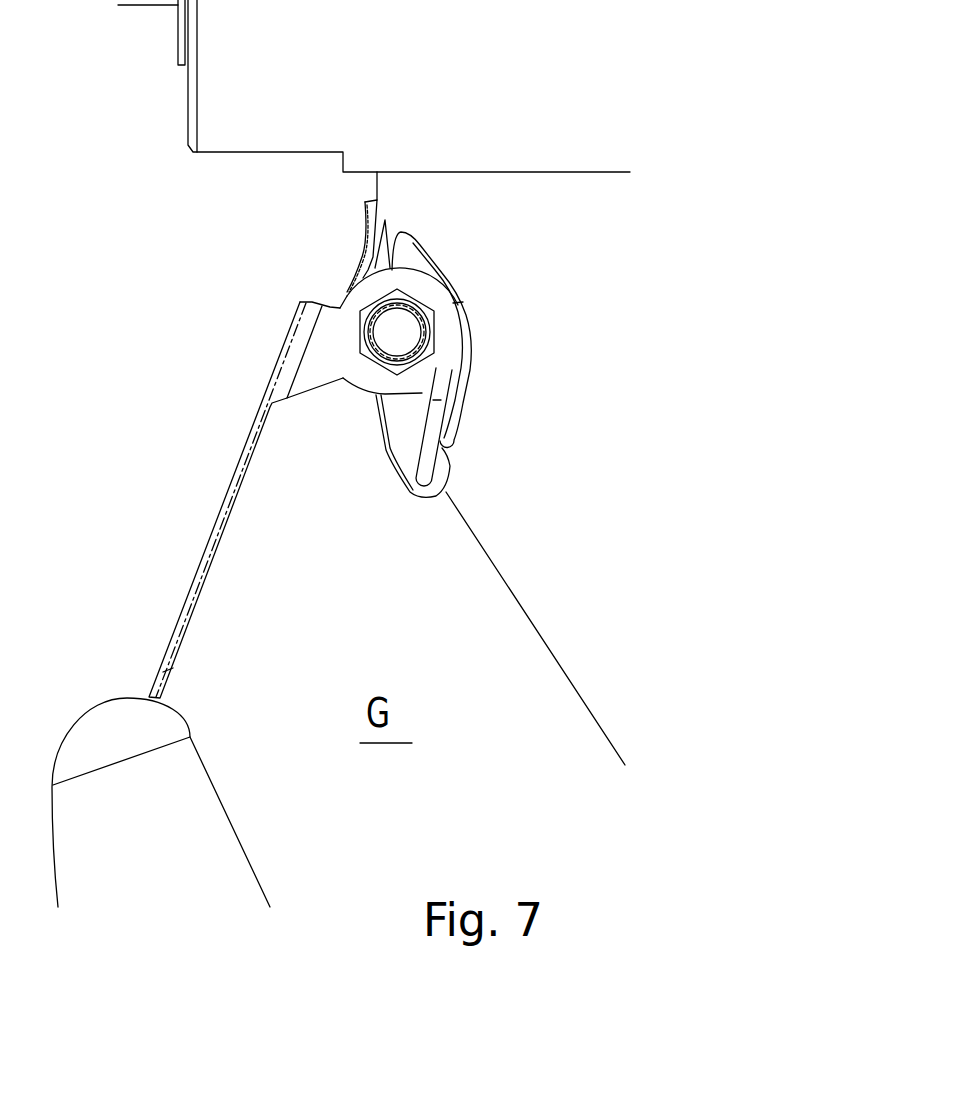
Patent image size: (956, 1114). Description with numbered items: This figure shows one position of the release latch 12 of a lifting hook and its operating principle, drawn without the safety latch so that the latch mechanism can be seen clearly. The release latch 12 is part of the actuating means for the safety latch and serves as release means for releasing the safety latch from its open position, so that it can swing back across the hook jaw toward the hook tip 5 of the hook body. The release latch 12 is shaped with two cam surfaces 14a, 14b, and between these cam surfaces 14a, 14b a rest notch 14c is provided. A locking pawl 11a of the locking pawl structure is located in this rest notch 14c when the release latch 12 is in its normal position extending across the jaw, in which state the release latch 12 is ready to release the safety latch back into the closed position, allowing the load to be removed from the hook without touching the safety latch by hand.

The hook tip 5 is at (100, 723).
The release latch 12 is at (215, 512).
The cam surface 14a is at (442, 347).
The cam surface 14b is at (418, 392).
The rest notch 14c is at (448, 364).
The locking pawl 11a is at (443, 381).